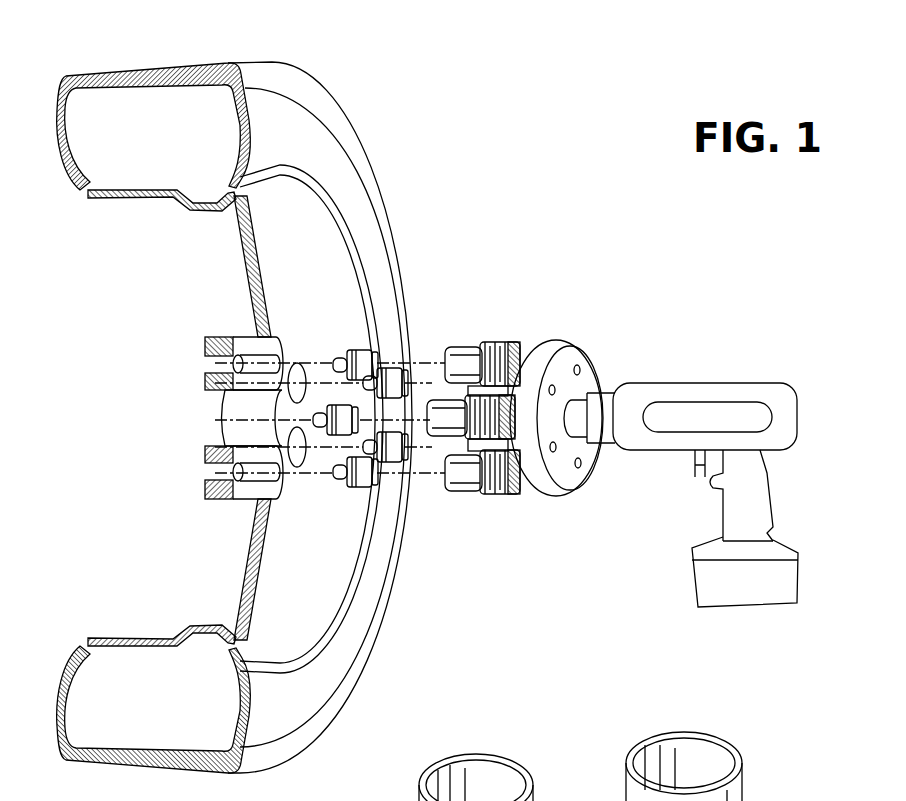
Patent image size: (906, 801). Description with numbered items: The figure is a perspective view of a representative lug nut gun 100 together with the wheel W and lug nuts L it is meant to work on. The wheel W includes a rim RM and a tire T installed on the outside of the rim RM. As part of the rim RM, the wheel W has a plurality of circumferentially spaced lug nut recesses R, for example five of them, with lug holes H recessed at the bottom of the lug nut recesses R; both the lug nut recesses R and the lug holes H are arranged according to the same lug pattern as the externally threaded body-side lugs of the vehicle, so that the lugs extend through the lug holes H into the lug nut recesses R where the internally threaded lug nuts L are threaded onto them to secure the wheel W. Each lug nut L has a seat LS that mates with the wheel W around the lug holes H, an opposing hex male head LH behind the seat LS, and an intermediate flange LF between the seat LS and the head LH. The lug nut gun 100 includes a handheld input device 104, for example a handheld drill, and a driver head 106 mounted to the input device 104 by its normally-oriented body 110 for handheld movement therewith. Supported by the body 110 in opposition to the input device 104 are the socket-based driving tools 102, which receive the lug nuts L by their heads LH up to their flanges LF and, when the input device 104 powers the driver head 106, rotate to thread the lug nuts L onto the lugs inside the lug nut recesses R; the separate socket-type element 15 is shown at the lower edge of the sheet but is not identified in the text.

The wheel W is at (300, 68).
The tire T is at (340, 153).
The rim RM is at (335, 252).
The lug hole H is at (227, 351).
The lug nut recess R is at (270, 354).
The lug nut L is at (383, 473).
The male head LH is at (373, 464).
The intermediate flange LF is at (360, 488).
The seat LS is at (343, 482).
The lug nut gun 100 is at (553, 334).
The driving tool 102 is at (466, 498).
The input device 104 is at (752, 386).
The driver head 106 is at (583, 355).
The body 110 is at (586, 373).
The socket extension 15 is at (840, 800).